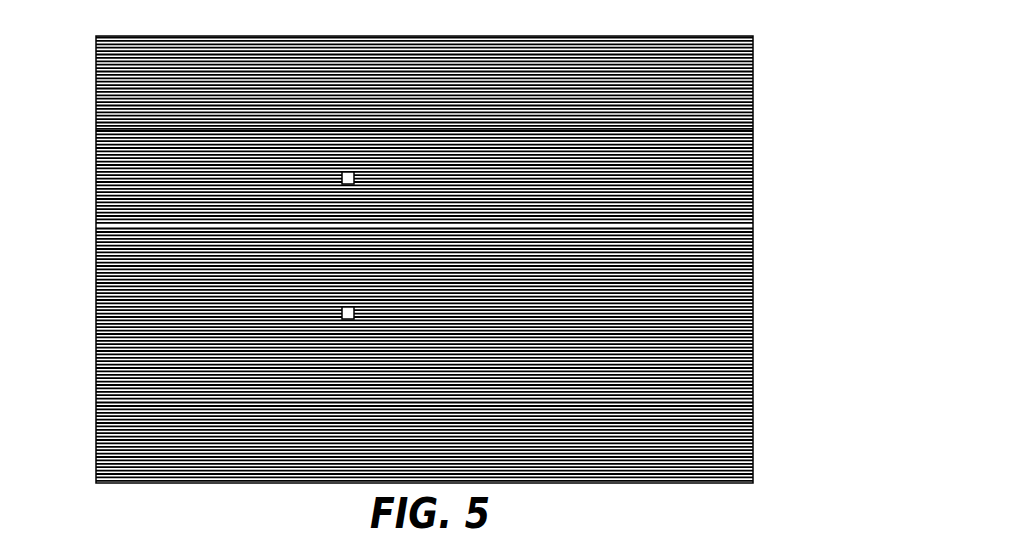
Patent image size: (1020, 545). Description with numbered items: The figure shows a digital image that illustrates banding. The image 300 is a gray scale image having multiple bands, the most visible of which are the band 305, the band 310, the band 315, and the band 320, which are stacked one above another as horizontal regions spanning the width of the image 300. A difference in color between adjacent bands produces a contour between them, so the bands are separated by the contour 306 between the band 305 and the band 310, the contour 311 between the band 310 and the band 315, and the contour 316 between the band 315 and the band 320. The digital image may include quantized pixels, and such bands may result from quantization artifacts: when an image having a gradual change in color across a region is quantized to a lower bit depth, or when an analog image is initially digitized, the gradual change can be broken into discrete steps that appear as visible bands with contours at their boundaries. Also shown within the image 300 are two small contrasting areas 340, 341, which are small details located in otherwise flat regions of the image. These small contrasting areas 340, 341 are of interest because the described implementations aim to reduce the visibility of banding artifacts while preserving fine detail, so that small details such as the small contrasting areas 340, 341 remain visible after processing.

The image 300 is at (858, 45).
The band 305 is at (750, 32).
The contour 306 is at (745, 121).
The band 310 is at (750, 127).
The contour 311 is at (745, 220).
The band 315 is at (750, 228).
The contour 316 is at (745, 394).
The band 320 is at (750, 398).
The small contrasting area 340 is at (333, 169).
The small contrasting area 341 is at (334, 305).